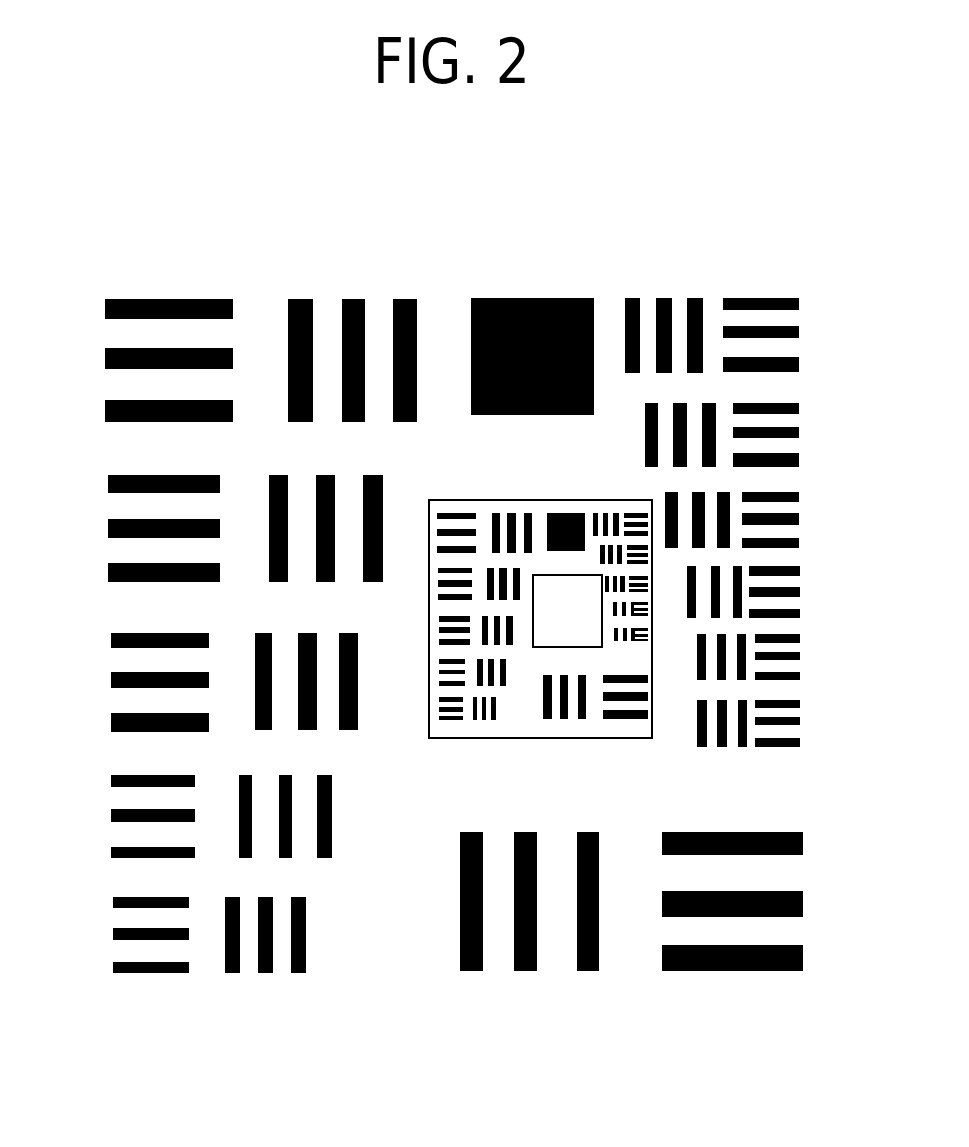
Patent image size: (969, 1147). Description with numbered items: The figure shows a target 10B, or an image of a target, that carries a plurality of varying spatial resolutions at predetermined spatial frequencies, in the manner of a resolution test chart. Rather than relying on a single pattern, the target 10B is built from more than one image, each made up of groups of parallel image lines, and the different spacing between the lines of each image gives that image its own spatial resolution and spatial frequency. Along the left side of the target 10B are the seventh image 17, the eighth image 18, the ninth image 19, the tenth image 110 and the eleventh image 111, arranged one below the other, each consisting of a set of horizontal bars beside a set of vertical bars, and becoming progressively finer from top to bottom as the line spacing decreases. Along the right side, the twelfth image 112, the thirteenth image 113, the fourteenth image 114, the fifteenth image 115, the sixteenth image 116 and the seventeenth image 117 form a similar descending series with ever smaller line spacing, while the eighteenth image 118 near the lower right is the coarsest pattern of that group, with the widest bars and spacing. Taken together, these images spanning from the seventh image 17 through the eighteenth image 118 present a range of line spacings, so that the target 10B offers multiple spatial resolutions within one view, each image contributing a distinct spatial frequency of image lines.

The target 10B is at (579, 257).
The image I7 17 is at (238, 360).
The image I8 18 is at (220, 528).
The image I9 19 is at (208, 682).
The image I10 110 is at (190, 816).
The image I11 111 is at (177, 935).
The image I12 112 is at (741, 335).
The image I13 113 is at (751, 435).
The image I14 114 is at (761, 520).
The image I15 115 is at (772, 592).
The image I16 116 is at (777, 657).
The image I17 117 is at (777, 723).
The image I18 118 is at (698, 971).